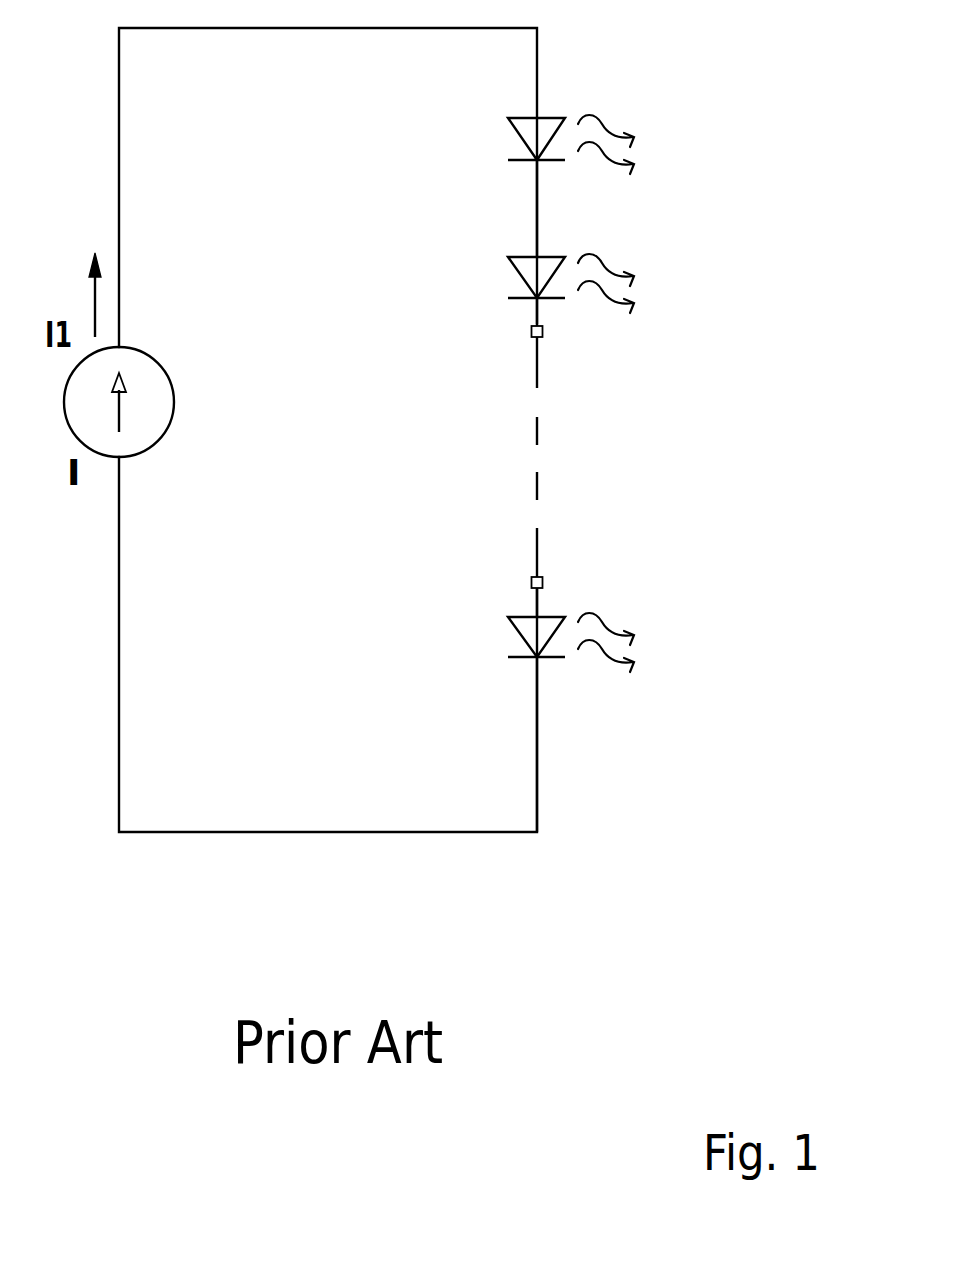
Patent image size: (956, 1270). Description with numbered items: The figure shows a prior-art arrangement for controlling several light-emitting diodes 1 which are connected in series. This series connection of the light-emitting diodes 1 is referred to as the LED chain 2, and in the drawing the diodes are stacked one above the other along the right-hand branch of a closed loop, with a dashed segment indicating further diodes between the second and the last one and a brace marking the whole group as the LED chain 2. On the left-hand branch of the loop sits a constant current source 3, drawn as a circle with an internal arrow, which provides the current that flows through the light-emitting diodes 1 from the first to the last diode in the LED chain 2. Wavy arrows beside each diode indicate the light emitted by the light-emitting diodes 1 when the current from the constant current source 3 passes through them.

The light-emitting diodes 1 is at (529, 473).
The LED chain 2 is at (600, 447).
The constant current source 3 is at (147, 388).